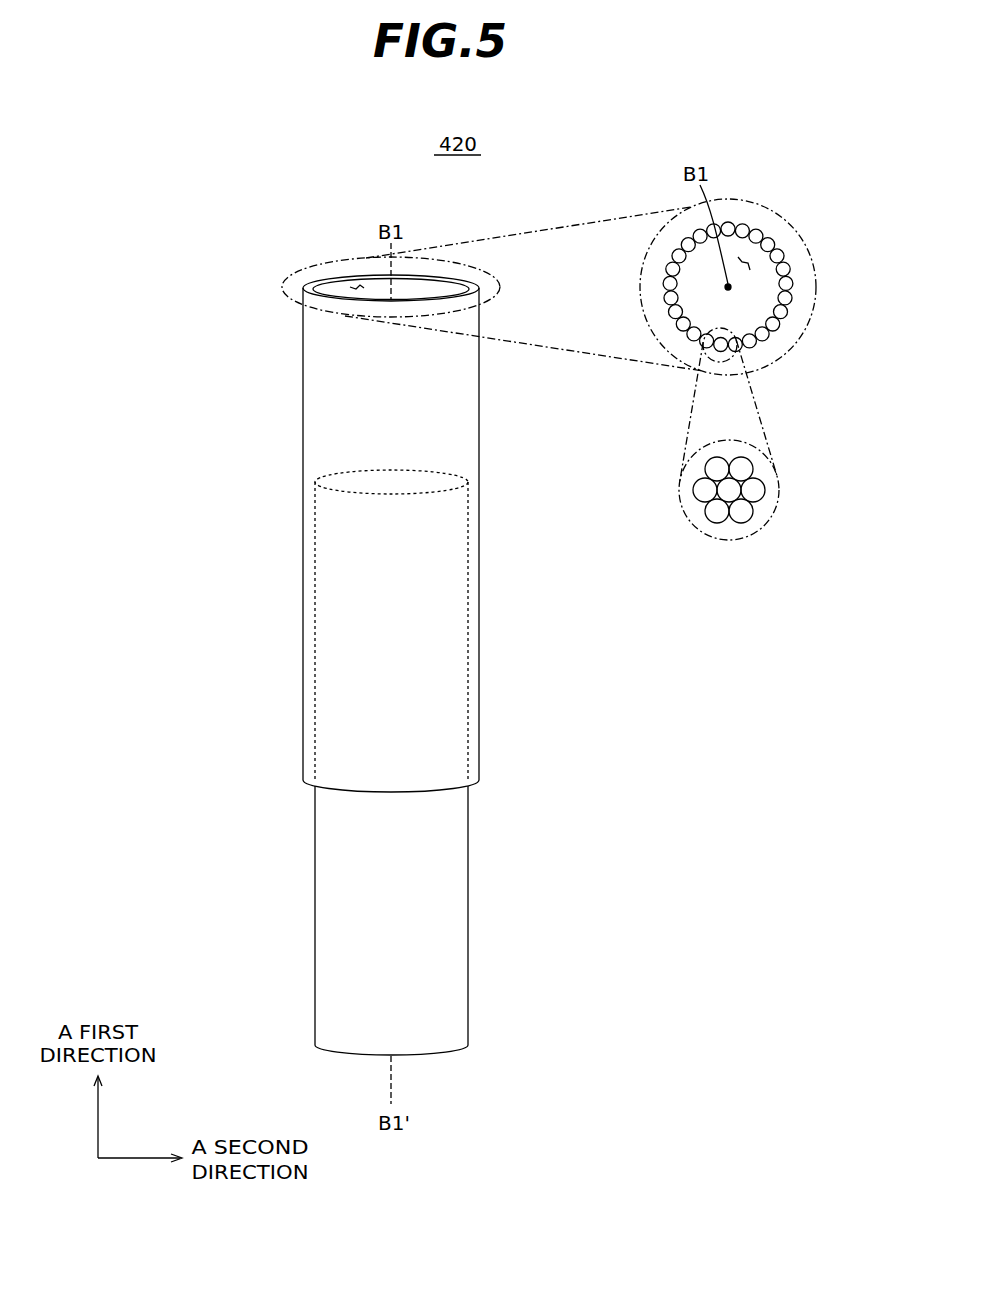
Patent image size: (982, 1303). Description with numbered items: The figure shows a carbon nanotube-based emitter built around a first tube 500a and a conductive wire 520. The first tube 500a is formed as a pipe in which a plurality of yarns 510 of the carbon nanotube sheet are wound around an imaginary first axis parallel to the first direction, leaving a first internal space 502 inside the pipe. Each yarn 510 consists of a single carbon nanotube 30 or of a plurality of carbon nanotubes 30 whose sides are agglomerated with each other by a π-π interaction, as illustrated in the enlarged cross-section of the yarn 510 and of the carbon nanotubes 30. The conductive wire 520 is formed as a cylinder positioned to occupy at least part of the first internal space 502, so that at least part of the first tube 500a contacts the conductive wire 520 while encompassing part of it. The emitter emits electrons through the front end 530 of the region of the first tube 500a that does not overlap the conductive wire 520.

The first tube 500a is at (455, 422).
The first internal space 502 is at (356, 287).
The yarn 510 is at (787, 297).
The conductive wire 520 is at (458, 845).
The front end 530 is at (495, 280).
The carbon nanotube 30 is at (757, 487).